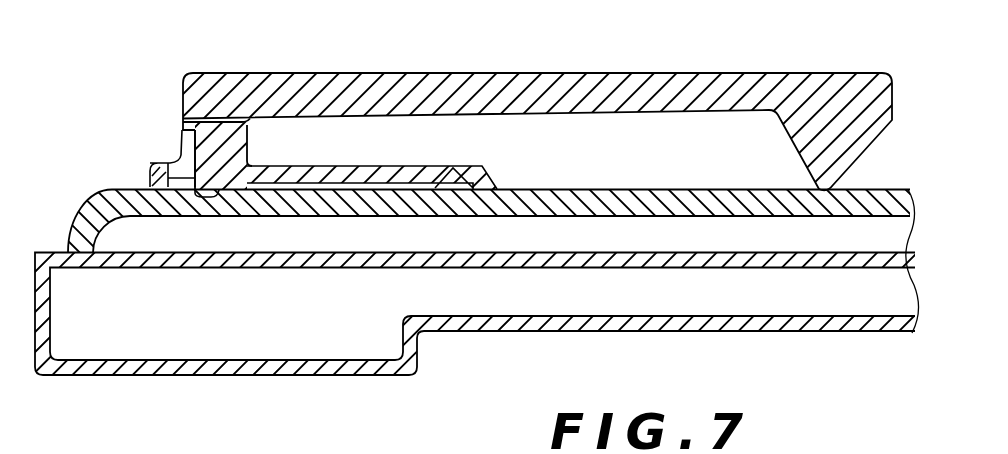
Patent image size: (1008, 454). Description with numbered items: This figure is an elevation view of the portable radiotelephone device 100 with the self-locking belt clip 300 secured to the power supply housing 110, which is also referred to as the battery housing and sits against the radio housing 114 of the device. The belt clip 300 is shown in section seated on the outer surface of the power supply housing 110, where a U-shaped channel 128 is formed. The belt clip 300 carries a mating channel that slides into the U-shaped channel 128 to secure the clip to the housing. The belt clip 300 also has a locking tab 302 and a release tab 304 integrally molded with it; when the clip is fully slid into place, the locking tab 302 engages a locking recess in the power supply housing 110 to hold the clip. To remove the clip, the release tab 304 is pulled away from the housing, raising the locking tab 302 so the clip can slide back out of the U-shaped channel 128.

The self-locking belt clip 300 is at (814, 64).
The release tab 304 is at (182, 131).
The locking tab 302 is at (207, 194).
The U-shaped channel 128 is at (492, 179).
The power supply housing 110 is at (885, 190).
The portable radiotelephone device 100 is at (622, 386).
The radio housing 114 is at (852, 333).